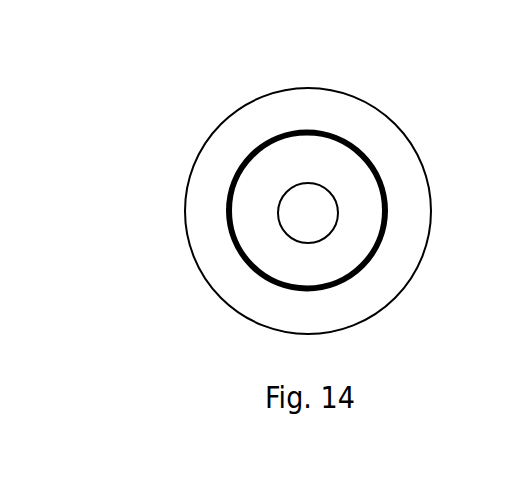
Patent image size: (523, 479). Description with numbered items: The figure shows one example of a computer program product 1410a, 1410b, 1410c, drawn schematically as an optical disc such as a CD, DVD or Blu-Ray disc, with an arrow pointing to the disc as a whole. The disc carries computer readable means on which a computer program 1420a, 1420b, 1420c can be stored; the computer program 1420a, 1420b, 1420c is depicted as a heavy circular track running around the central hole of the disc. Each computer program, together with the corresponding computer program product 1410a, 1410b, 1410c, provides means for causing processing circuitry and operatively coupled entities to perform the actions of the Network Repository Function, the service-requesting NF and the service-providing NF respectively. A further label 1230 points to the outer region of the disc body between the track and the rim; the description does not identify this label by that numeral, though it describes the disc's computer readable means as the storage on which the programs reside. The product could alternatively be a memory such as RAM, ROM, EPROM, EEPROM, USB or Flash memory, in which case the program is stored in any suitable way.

The computer program product 1410a is at (244, 176).
The computer program product 1410b is at (244, 192).
The computer program product 1410c is at (174, 134).
The computer program 1420a is at (221, 211).
The computer program 1420b is at (221, 211).
The computer program 1420c is at (232, 234).
The outer layer 1230 is at (262, 315).